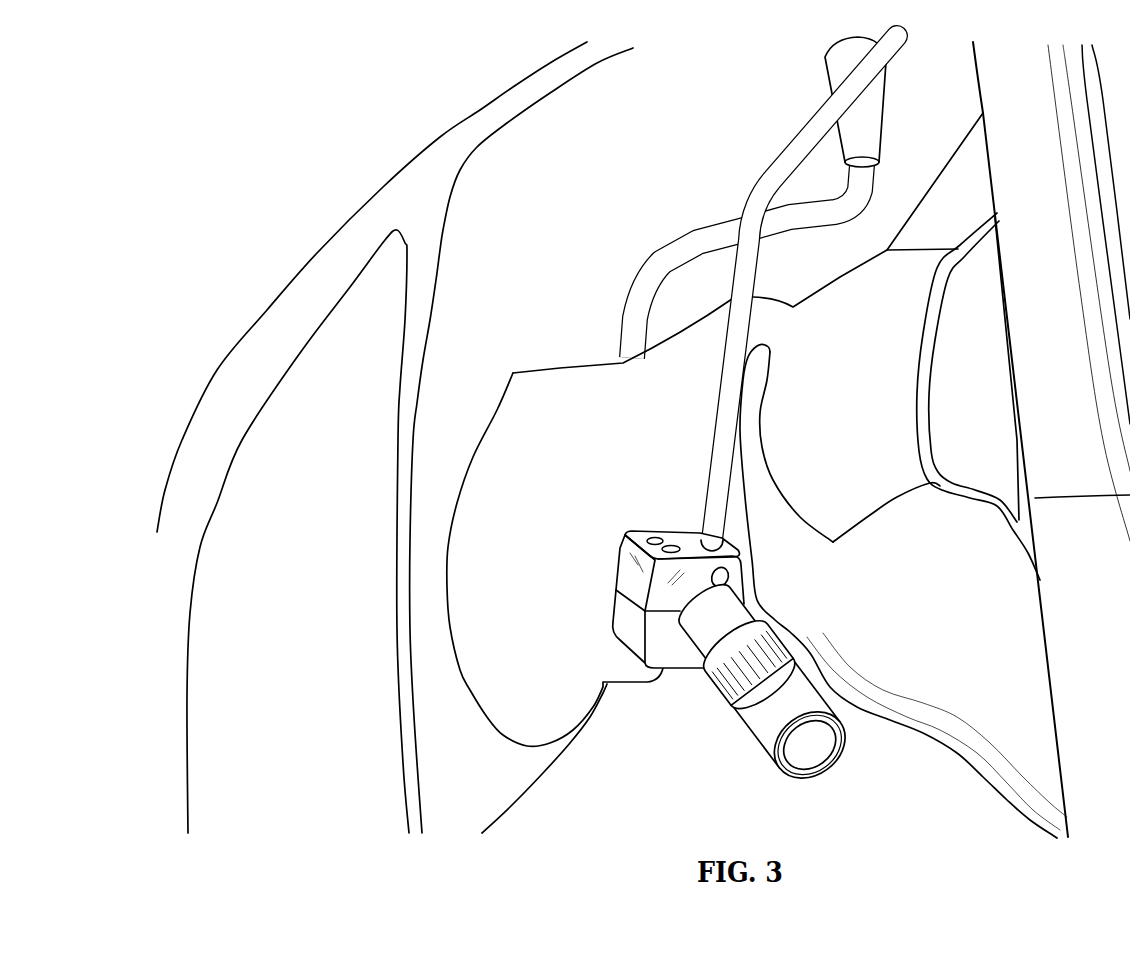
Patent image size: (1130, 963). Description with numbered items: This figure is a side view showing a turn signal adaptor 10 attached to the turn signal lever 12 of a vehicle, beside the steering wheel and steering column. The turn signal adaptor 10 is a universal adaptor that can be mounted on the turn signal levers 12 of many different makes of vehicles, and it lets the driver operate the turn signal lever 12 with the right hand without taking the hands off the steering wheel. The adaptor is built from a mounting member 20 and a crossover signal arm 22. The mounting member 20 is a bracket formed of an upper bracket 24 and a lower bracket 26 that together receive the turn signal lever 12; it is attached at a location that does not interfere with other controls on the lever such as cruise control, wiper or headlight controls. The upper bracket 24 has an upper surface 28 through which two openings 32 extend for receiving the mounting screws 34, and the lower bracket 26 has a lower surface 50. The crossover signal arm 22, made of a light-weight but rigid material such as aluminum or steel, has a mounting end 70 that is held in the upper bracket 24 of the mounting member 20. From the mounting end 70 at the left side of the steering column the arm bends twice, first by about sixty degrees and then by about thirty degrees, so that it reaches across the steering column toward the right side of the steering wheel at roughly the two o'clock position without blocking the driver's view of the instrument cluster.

The turn signal adaptor 10 is at (750, 108).
The turn signal lever 12 is at (745, 748).
The mounting member 20 is at (640, 589).
The crossover signal arm 22 is at (760, 263).
The upper bracket 24 is at (628, 575).
The lower bracket 26 is at (617, 647).
The upper surface 28 is at (691, 537).
The openings 32 is at (646, 541).
The mounting screws 34 is at (658, 537).
The lower surface 50 is at (672, 682).
The mounting end 70 is at (724, 538).